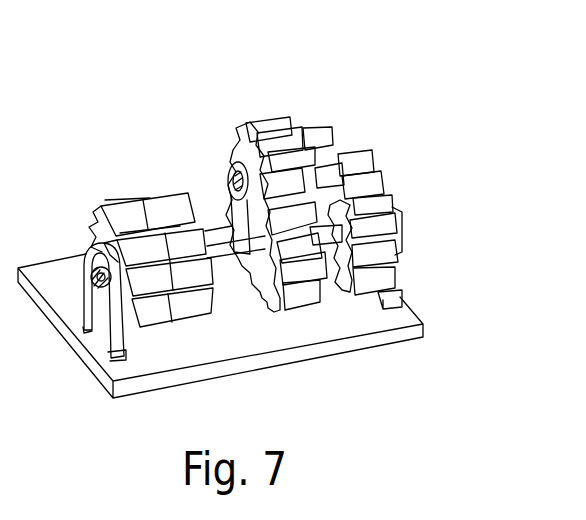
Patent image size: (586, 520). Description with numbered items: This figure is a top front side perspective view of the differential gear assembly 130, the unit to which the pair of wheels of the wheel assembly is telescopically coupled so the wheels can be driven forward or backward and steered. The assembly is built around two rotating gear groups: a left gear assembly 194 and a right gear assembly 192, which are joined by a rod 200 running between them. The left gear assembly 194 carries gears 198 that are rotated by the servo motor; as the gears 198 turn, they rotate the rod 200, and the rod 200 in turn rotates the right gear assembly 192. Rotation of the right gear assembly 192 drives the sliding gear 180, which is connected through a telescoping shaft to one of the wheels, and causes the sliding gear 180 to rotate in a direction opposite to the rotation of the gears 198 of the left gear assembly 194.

The differential gear assembly 130 is at (176, 74).
The sliding gear 180 is at (285, 195).
The right gear assembly 192 is at (347, 315).
The left gear assembly 194 is at (173, 214).
The gears 198 is at (188, 332).
The rod 200 is at (237, 258).